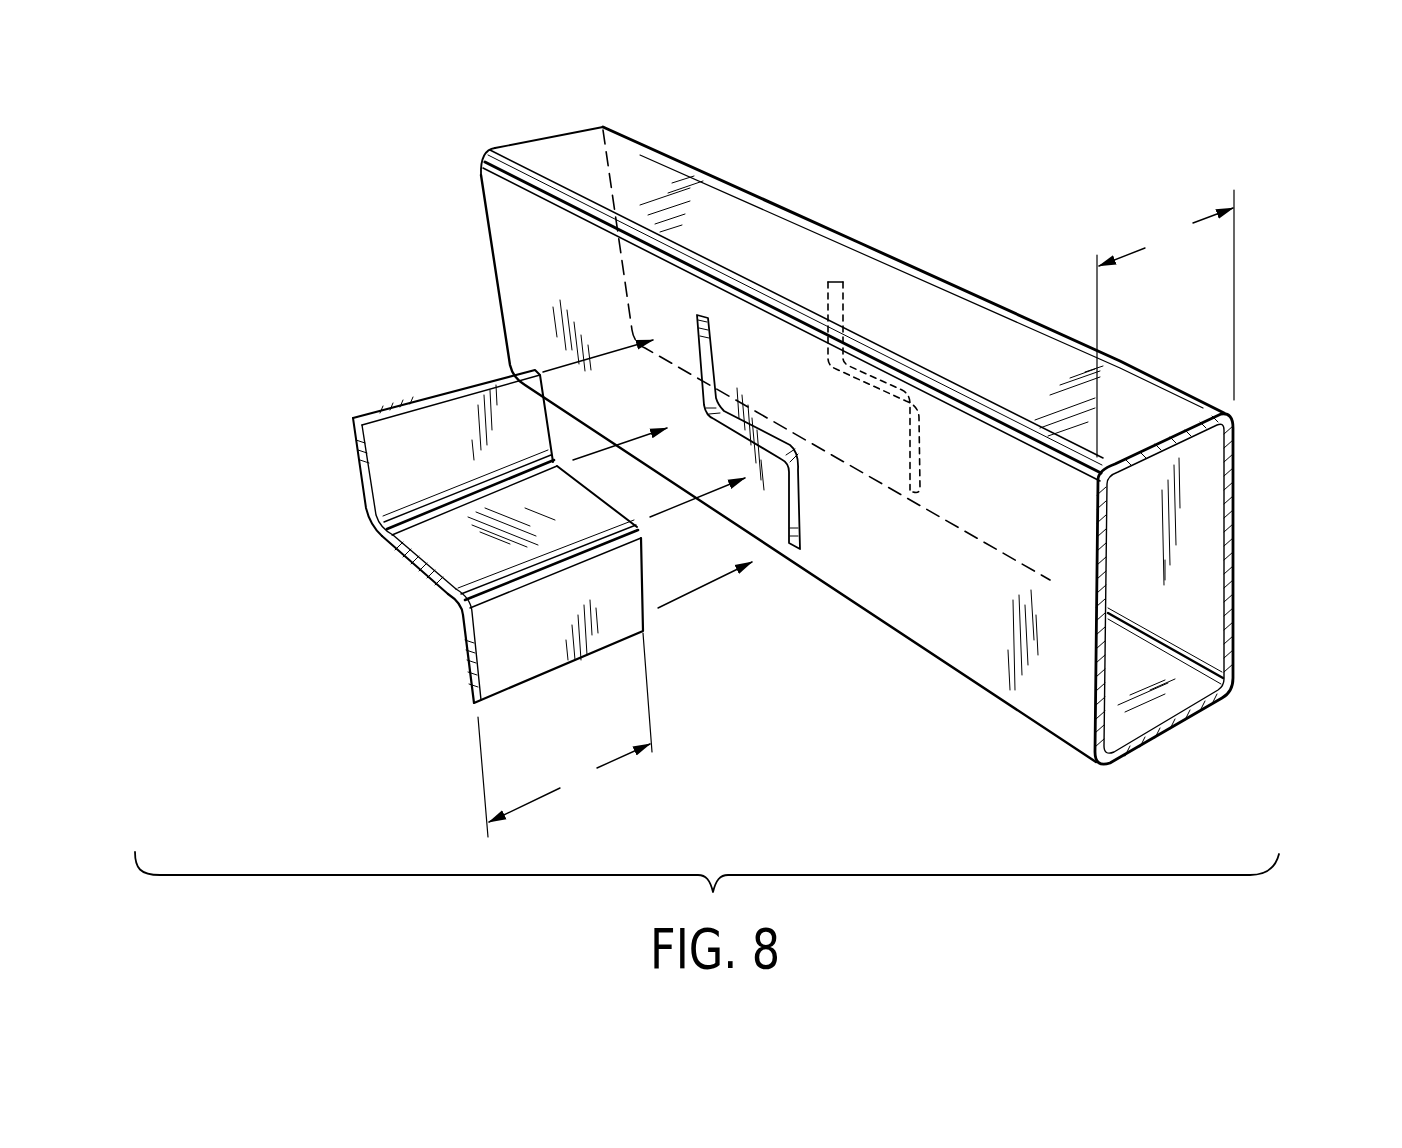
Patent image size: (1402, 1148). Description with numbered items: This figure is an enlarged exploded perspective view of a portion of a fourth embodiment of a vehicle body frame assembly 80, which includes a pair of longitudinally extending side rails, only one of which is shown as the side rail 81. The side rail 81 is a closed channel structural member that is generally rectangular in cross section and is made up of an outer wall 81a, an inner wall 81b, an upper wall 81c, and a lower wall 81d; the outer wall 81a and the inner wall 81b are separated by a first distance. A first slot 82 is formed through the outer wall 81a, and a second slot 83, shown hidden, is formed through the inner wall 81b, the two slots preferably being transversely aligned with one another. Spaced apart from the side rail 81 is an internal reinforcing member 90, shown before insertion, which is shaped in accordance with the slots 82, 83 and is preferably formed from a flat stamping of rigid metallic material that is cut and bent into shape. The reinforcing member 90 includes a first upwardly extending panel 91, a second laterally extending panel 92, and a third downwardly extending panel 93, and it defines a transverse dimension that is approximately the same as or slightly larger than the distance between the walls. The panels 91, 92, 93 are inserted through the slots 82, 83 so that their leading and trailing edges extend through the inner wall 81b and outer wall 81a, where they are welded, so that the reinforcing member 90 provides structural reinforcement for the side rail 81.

The vehicle body frame assembly 80 is at (1058, 180).
The side rail 81 is at (1233, 412).
The outer wall 81a is at (1092, 690).
The inner wall 81b is at (1237, 533).
The upper wall 81c is at (752, 228).
The lower wall 81d is at (1188, 695).
The first slot 82 is at (802, 512).
The second slot 83 is at (846, 300).
The internal reinforcing member 90 is at (342, 548).
The first upwardly extending panel 91 is at (447, 425).
The second laterally extending panel 92 is at (460, 547).
The third downwardly extending panel 93 is at (517, 657).